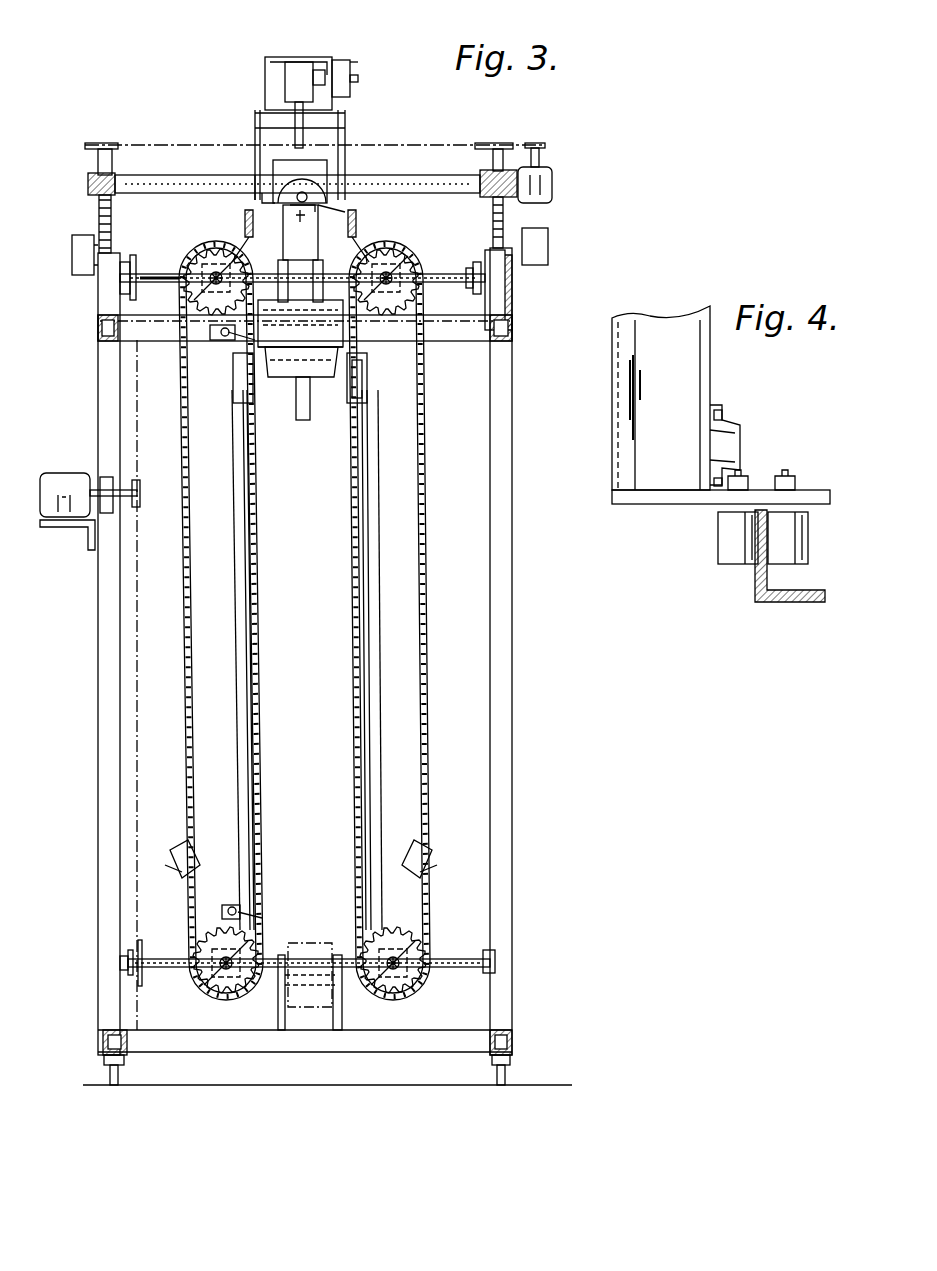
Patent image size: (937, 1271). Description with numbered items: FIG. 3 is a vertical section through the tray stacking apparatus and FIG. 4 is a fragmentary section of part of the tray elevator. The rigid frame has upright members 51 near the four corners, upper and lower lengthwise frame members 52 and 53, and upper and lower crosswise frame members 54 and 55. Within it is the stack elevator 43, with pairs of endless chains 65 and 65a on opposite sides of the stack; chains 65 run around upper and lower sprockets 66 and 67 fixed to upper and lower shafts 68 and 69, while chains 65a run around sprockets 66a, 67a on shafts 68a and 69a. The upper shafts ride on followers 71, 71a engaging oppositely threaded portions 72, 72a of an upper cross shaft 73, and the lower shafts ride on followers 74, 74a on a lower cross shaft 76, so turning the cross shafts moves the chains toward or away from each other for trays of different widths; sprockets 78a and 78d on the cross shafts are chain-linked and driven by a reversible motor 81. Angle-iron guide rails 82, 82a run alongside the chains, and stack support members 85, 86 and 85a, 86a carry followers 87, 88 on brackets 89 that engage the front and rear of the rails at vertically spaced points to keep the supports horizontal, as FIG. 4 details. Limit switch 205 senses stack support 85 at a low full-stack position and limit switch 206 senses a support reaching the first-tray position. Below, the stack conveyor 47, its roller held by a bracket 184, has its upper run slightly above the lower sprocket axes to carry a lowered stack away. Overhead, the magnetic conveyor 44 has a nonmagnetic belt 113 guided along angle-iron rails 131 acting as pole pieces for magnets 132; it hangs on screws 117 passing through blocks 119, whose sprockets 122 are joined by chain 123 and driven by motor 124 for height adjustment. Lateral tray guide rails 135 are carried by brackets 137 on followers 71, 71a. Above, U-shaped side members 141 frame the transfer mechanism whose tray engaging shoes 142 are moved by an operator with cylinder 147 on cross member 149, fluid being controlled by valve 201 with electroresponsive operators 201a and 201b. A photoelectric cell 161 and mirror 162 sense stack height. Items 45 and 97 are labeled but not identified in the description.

In FIG. 3, the stack elevator 43 is at (399, 594).
In FIG. 3, the overhead magnetic conveyor 44 is at (351, 216).
In FIG. 3, the motor mounting frame 45 is at (355, 130).
In FIG. 3, the stack conveyor 47 is at (322, 937).
In FIG. 3, the upright member 51 is at (512, 828).
In FIG. 3, the upper lengthwise extending frame member 52 is at (508, 341).
In FIG. 3, the lower lengthwise extending frame member 53 is at (512, 1030).
In FIG. 3, the upper crosswise extending frame member 54 is at (452, 341).
In FIG. 3, the lower crosswise extending frame member 55 is at (420, 1030).
In FIG. 3, the endless chains 65 is at (262, 822).
In FIG. 3, the endless chains 65a is at (362, 850).
In FIG. 4, the endless chains 65a is at (745, 445).
In FIG. 3, the upper sprocket 66 is at (222, 255).
In FIG. 3, the upper sprocket 66a is at (410, 260).
In FIG. 3, the lower sprocket 67 is at (235, 985).
In FIG. 3, the lower sprocket 67a is at (395, 990).
In FIG. 3, the upper shaft 68 is at (215, 275).
In FIG. 3, the upper shaft 68a is at (395, 285).
In FIG. 3, the lower shaft 69 is at (215, 975).
In FIG. 3, the lower shaft 69a is at (400, 970).
In FIG. 3, the follower 71 is at (190, 305).
In FIG. 3, the follower 71a is at (400, 275).
In FIG. 3, the threaded portion 72 is at (175, 280).
In FIG. 3, the threaded portion 72a is at (432, 275).
In FIG. 3, the upper cross shaft 73 is at (512, 288).
In FIG. 3, the follower 74 is at (200, 945).
In FIG. 3, the follower 74a is at (428, 935).
In FIG. 3, the lower cross shaft 76 is at (462, 960).
In FIG. 3, the sprocket 78a is at (138, 260).
In FIG. 3, the sprocket 78d is at (128, 960).
In FIG. 3, the reversible motor 81 is at (62, 473).
In FIG. 3, the guide rail 82 is at (240, 728).
In FIG. 3, the guide rail 82a is at (385, 728).
In FIG. 3, the stack support member 85 is at (262, 400).
In FIG. 3, the stack support member 85a is at (335, 385).
In FIG. 4, the stack support member 85a is at (612, 490).
In FIG. 3, the stack support member 86 is at (165, 865).
In FIG. 3, the stack support member 86a is at (455, 862).
In FIG. 3, the follower 87 is at (370, 372).
In FIG. 4, the follower 87 is at (810, 548).
In FIG. 3, the follower 88 is at (368, 395).
In FIG. 4, the follower 88 is at (718, 548).
In FIG. 4, the bracket 89 is at (695, 508).
In FIG. 3, the left frame upright 97 is at (135, 637).
In FIG. 3, the belt 113 is at (280, 165).
In FIG. 3, the screw 117 is at (505, 212).
In FIG. 3, the block 119 is at (480, 186).
In FIG. 3, the sprocket 122 is at (490, 143).
In FIG. 3, the chain 123 is at (432, 145).
In FIG. 3, the motor 124 is at (552, 185).
In FIG. 3, the angle-iron rail 131 is at (256, 236).
In FIG. 3, the magnet 132 is at (325, 190).
In FIG. 3, the lateral tray guide rail 135 is at (360, 218).
In FIG. 3, the bracket 137 is at (365, 248).
In FIG. 3, the U-shaped side member 141 is at (265, 90).
In FIG. 3, the tray engaging shoe 142 is at (262, 193).
In FIG. 3, the operator 147 is at (290, 80).
In FIG. 3, the cross member 149 is at (298, 57).
In FIG. 3, the photoelectric cell 161 is at (548, 243).
In FIG. 3, the mirror 162 is at (72, 258).
In FIG. 3, the bracket 184 is at (285, 1020).
In FIG. 3, the valve 201 is at (350, 72).
In FIG. 3, the electroresponsive operator 201a is at (350, 62).
In FIG. 3, the electroresponsive operator 201b is at (358, 80).
In FIG. 3, the limit switch 205 is at (228, 905).
In FIG. 3, the limit switch 206 is at (218, 340).